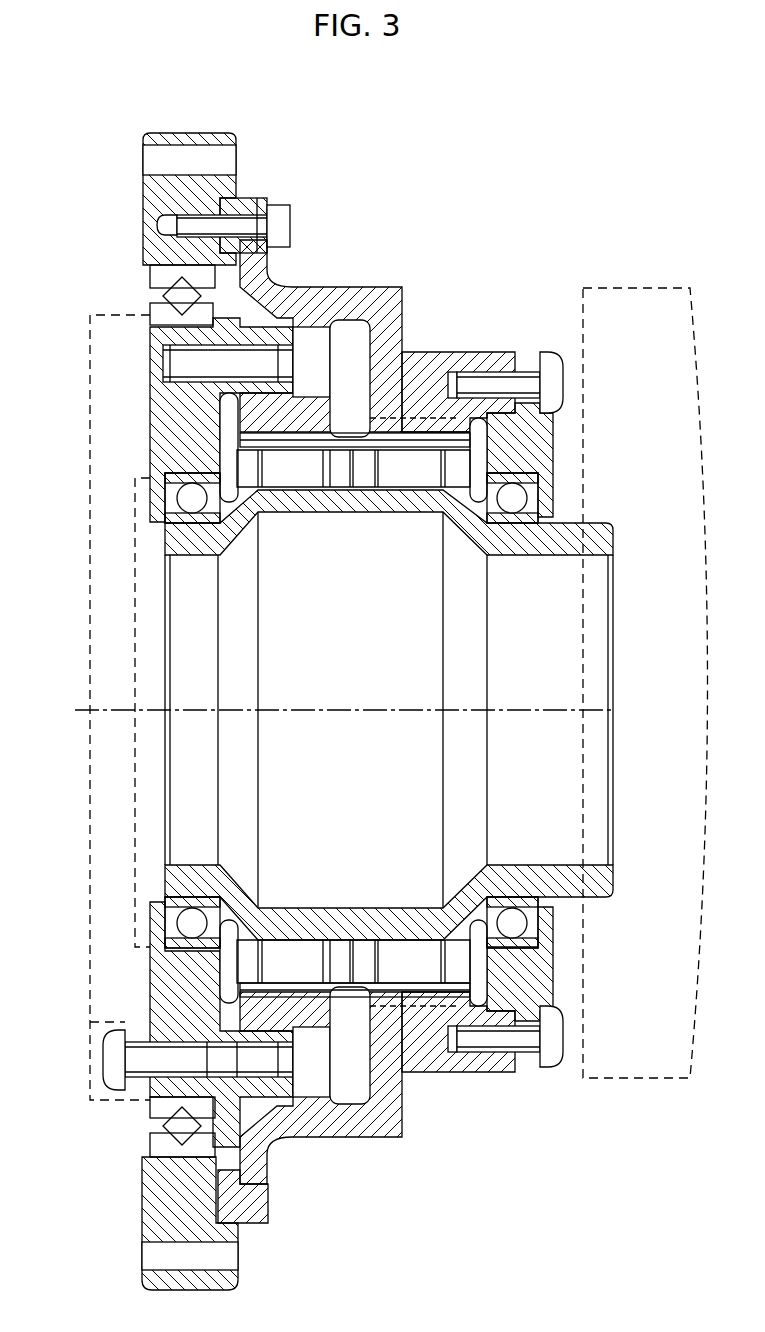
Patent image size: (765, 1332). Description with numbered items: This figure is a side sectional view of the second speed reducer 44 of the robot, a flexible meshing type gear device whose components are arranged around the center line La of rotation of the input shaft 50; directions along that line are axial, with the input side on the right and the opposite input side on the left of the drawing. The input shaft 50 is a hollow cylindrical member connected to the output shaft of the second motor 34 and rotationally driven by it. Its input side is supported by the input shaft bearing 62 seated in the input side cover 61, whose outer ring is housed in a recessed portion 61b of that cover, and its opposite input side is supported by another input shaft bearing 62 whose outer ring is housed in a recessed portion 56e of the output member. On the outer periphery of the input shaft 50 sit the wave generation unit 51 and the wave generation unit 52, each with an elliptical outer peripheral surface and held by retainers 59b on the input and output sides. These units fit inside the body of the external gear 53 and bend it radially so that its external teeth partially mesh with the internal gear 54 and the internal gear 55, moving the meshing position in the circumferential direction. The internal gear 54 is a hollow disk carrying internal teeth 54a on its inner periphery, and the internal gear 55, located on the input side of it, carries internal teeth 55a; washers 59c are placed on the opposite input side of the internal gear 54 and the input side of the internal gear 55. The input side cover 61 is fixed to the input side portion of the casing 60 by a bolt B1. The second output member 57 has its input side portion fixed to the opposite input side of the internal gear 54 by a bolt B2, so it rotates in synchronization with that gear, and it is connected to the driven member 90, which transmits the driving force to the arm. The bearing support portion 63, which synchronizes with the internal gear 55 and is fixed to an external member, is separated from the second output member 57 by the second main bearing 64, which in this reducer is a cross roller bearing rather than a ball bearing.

The second motor 34 is at (658, 286).
The second speed reducer 44 is at (494, 110).
The input shaft 50 is at (525, 556).
The wave generation unit 51 is at (280, 470).
The wave generation unit 52 is at (400, 470).
The external gear 53 is at (345, 470).
The internal gear 54 is at (265, 425).
The internal teeth 54a is at (300, 425).
The internal gear 55 is at (428, 415).
The internal teeth 55a is at (392, 412).
The recessed portion 56e is at (178, 462).
The second output member 57 is at (160, 428).
The retainers 59b is at (342, 950).
The washers 59c is at (258, 905).
The casing 60 is at (356, 395).
The input side cover 61 is at (546, 438).
The recessed portion 61b is at (520, 462).
The input shaft bearing 62 is at (192, 500).
The bearing support portion 63 is at (165, 190).
The second main bearing 64 is at (152, 272).
The driven member 90 is at (88, 338).
The bolt B1 is at (552, 380).
The bolt B2 is at (113, 1062).
The center line of rotation La is at (585, 706).